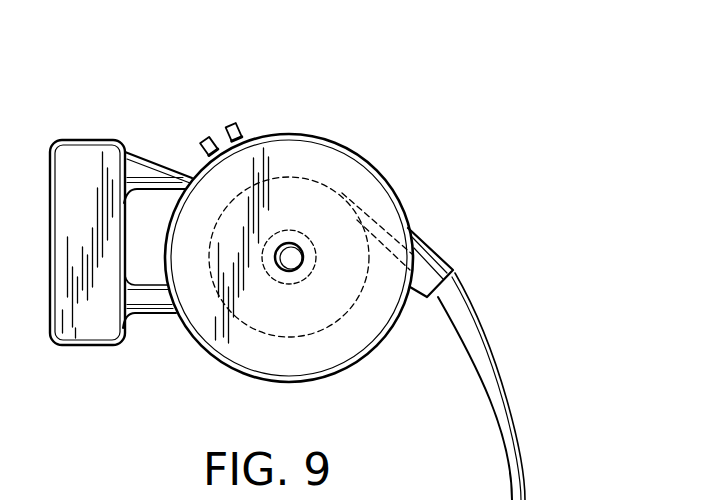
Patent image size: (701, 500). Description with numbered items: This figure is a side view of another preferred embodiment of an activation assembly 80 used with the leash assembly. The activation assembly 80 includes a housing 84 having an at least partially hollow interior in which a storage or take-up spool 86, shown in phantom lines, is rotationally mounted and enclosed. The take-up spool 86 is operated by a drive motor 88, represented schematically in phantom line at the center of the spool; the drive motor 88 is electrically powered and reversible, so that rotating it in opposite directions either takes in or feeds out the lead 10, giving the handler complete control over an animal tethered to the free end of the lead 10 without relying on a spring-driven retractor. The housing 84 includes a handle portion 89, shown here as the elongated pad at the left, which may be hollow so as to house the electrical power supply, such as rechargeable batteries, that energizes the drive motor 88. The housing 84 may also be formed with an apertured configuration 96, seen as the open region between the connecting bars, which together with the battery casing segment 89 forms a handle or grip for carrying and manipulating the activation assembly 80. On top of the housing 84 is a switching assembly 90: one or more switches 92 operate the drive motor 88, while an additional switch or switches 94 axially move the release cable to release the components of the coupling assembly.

The lead 10 is at (481, 336).
The activation assembly 80 is at (393, 168).
The housing 84 is at (214, 361).
The take-up spool 86 is at (312, 332).
The drive motor 88 is at (285, 229).
The handle portion 89 is at (85, 138).
The switching assembly 90 is at (181, 80).
The switch 92 is at (205, 140).
The switch 94 is at (228, 123).
The apertured configuration 96 is at (127, 260).